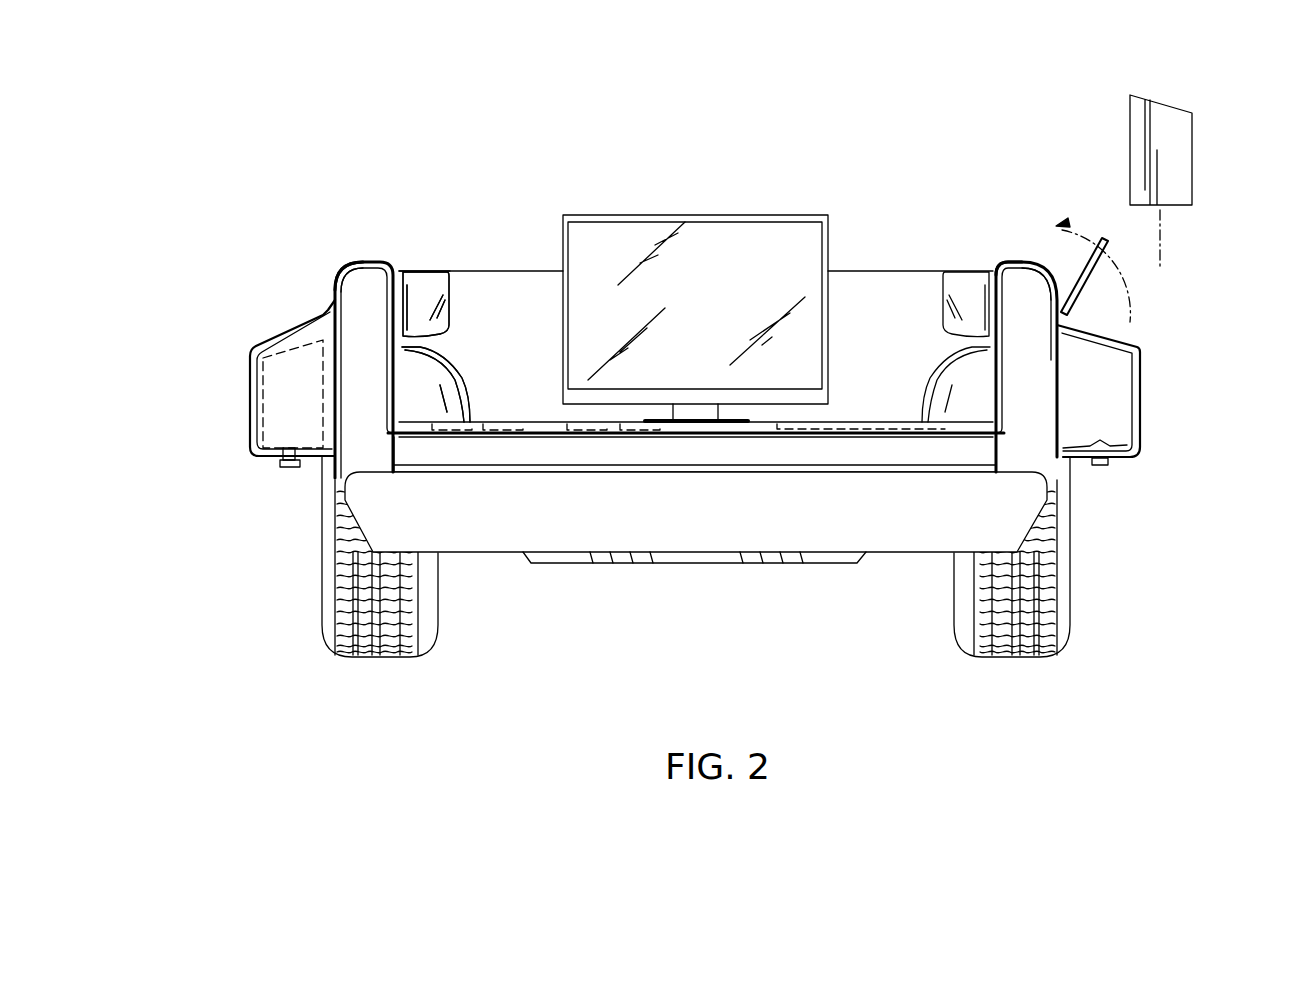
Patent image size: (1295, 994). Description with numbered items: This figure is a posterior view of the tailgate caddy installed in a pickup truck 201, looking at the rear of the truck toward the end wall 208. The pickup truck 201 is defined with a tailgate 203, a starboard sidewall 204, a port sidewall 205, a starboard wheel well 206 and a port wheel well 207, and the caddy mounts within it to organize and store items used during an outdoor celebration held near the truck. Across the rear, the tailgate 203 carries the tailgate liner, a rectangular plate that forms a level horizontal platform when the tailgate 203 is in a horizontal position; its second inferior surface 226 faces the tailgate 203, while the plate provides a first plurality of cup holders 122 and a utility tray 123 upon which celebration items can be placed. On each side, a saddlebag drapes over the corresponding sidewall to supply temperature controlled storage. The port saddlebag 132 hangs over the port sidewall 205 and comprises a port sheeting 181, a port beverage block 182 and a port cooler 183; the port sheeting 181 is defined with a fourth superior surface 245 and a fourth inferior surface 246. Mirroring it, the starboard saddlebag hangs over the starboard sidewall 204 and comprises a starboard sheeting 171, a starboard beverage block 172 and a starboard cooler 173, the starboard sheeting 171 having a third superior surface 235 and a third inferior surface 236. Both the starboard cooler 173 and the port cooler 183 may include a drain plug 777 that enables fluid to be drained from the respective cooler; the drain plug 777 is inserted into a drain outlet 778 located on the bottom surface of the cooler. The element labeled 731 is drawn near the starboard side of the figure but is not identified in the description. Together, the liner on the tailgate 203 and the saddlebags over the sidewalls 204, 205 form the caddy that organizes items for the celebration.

The port saddlebag 132 is at (273, 312).
The port sheeting 181 is at (366, 320).
The starboard sheeting 171 is at (1033, 262).
The port beverage block 182 is at (420, 297).
The starboard beverage block 172 is at (957, 297).
The port cooler 183 is at (250, 392).
The starboard cooler 173 is at (1127, 388).
The fourth superior surface 245 is at (347, 273).
The fourth inferior surface 246 is at (358, 312).
The third superior surface 235 is at (1013, 262).
The third inferior surface 236 is at (1120, 340).
The end wall 208 is at (525, 287).
The port wheel well 207 is at (447, 380).
The starboard wheel well 206 is at (955, 383).
The first plurality of cup holders 122 is at (595, 437).
The utility tray 123 is at (835, 437).
The second inferior surface 226 is at (693, 437).
The pickup truck 201 is at (1077, 553).
The tailgate 203 is at (500, 455).
The starboard sidewall 204 is at (357, 427).
The port sidewall 205 is at (1030, 437).
The lever 731 is at (1093, 302).
The drain plug 777 is at (285, 466).
The drain outlet 778 is at (284, 463).